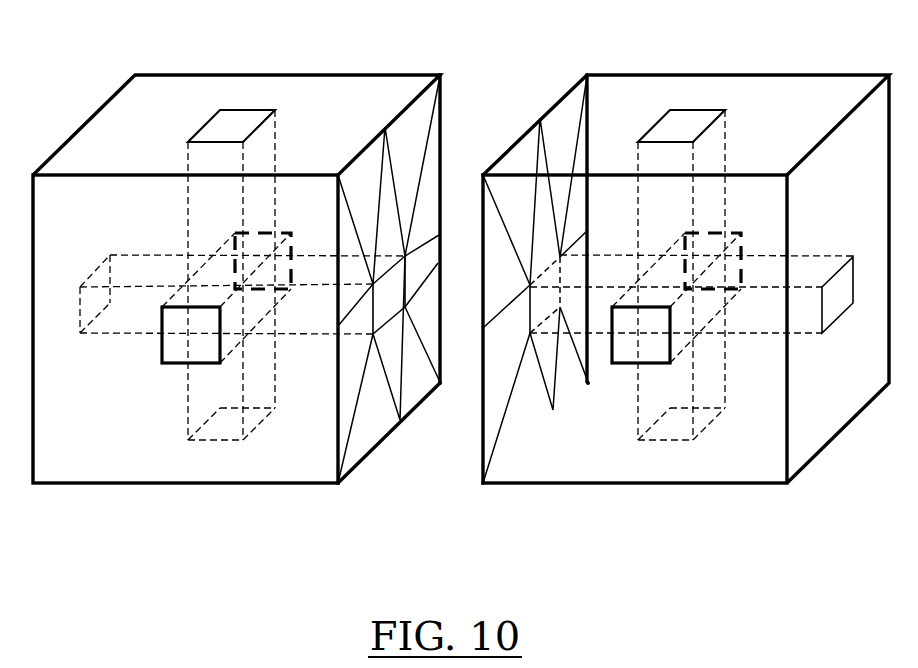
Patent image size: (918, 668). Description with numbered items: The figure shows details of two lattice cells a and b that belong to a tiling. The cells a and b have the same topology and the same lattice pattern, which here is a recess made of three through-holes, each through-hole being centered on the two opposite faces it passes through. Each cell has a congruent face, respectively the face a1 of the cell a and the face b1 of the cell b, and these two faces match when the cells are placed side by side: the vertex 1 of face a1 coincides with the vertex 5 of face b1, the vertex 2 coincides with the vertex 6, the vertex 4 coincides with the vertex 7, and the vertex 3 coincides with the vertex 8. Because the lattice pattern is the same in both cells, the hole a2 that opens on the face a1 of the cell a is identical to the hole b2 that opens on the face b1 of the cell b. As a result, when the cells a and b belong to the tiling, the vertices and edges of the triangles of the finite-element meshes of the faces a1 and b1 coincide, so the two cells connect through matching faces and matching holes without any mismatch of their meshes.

The vertex 1 is at (338, 175).
The vertex 2 is at (440, 75).
The vertex 3 is at (338, 483).
The vertex 4 is at (439, 384).
The vertex 5 is at (483, 176).
The vertex 6 is at (587, 75).
The vertex 7 is at (588, 383).
The vertex 8 is at (483, 483).
The lattice cell a is at (124, 532).
The congruent face a1 is at (403, 135).
The hole a2 is at (388, 292).
The lattice cell b is at (624, 539).
The congruent face b1 is at (565, 138).
The hole b2 is at (550, 303).